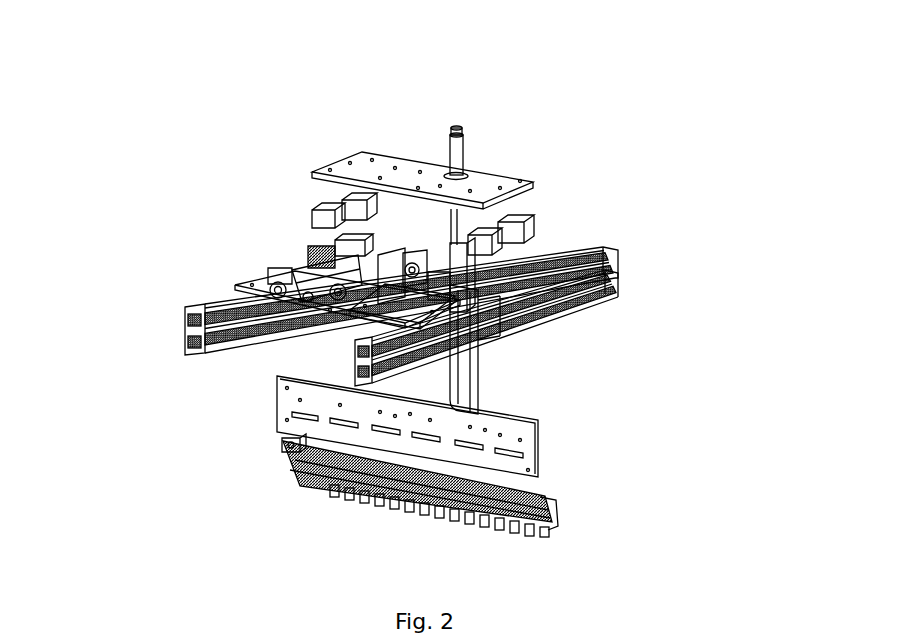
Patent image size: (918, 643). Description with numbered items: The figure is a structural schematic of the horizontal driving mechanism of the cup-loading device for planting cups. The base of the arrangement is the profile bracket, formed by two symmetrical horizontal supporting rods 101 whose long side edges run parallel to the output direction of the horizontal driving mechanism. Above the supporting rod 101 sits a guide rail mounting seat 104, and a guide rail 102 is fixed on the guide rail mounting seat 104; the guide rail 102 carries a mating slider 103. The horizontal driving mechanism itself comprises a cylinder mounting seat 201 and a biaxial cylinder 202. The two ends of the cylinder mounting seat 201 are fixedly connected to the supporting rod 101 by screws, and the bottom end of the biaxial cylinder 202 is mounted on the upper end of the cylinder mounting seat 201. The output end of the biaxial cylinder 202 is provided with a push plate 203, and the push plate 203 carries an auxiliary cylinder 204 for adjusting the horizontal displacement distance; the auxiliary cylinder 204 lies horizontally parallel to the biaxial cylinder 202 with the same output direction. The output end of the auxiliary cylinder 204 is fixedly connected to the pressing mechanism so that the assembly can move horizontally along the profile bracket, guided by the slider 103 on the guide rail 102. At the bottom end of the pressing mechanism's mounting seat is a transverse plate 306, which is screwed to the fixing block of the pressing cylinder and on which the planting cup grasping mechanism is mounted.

The horizontal supporting rod 101 is at (572, 295).
The guide rail 102 is at (583, 247).
The slider 103 is at (527, 303).
The guide rail mounting seat 104 is at (603, 262).
The cylinder mounting seat 201 is at (405, 312).
The biaxial cylinder 202 is at (315, 255).
The push plate 203 is at (378, 268).
The auxiliary cylinder 204 is at (320, 312).
The transverse plate 306 is at (278, 430).